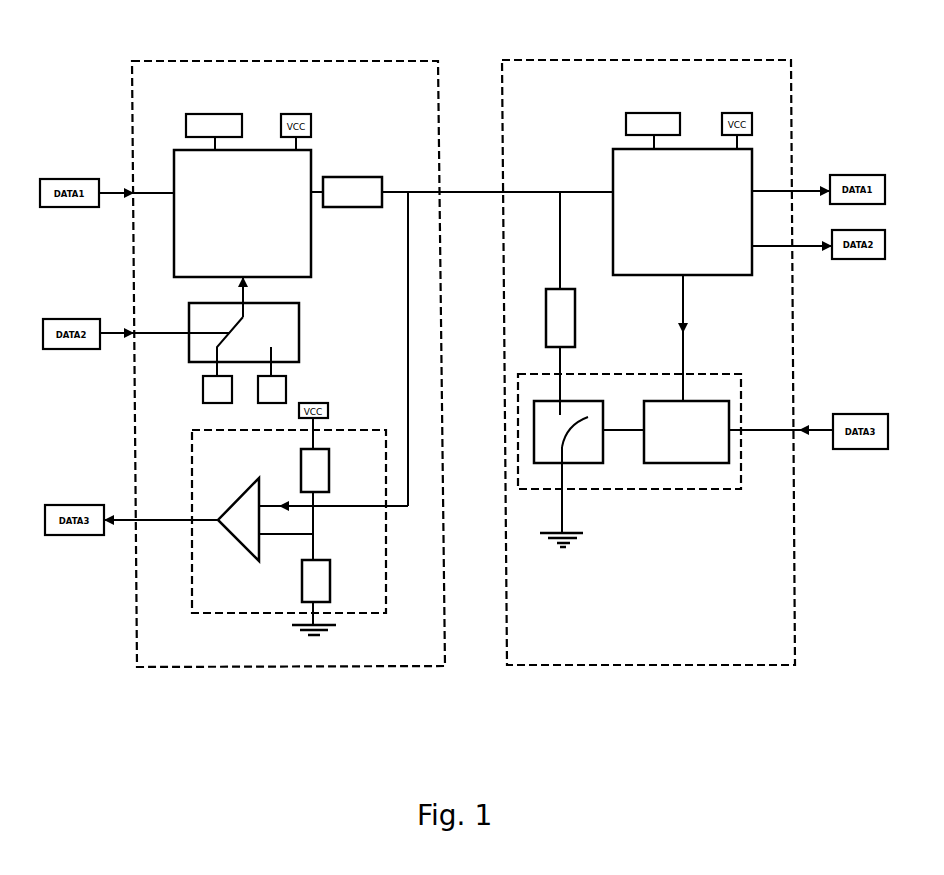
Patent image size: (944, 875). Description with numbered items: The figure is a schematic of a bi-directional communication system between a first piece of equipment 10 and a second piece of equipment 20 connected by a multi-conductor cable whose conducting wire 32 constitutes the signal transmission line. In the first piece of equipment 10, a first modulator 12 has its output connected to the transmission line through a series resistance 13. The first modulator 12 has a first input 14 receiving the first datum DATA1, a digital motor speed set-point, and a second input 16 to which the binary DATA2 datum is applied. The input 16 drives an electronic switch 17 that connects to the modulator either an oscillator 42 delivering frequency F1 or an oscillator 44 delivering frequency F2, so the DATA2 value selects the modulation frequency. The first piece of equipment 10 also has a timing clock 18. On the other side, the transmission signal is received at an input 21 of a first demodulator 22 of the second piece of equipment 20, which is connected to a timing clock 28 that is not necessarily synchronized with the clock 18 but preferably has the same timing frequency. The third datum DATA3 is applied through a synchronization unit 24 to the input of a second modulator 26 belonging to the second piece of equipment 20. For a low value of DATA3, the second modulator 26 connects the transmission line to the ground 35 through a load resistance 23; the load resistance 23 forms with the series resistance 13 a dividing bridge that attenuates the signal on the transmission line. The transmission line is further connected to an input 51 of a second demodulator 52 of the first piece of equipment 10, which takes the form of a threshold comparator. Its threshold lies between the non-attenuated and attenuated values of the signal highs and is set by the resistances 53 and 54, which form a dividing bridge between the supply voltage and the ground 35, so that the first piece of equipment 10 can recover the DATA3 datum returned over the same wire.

The first piece of equipment 10 is at (285, 62).
The first modulator 12 is at (312, 160).
The series resistance 13 is at (350, 176).
The first input 14 is at (150, 190).
The second input 16 is at (247, 288).
The electronic switch 17 is at (300, 340).
The timing clock 18 is at (210, 113).
The second piece of equipment 20 is at (655, 58).
The input 21 is at (537, 189).
The first demodulator 22 is at (620, 145).
The load resistance 23 is at (575, 333).
The synchronization unit 24 is at (707, 400).
The second modulator 26 is at (577, 399).
The timing clock 28 is at (655, 110).
The conducting wire 32 is at (460, 193).
The ground 35 is at (325, 637).
The oscillator 42 is at (202, 388).
The oscillator 44 is at (287, 383).
The input 51 is at (410, 490).
The second demodulator 52 is at (238, 617).
The resistance 53 is at (330, 468).
The resistance 54 is at (330, 582).